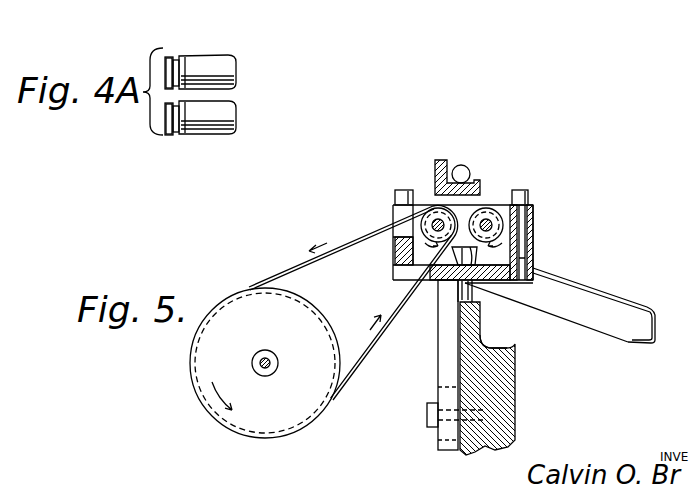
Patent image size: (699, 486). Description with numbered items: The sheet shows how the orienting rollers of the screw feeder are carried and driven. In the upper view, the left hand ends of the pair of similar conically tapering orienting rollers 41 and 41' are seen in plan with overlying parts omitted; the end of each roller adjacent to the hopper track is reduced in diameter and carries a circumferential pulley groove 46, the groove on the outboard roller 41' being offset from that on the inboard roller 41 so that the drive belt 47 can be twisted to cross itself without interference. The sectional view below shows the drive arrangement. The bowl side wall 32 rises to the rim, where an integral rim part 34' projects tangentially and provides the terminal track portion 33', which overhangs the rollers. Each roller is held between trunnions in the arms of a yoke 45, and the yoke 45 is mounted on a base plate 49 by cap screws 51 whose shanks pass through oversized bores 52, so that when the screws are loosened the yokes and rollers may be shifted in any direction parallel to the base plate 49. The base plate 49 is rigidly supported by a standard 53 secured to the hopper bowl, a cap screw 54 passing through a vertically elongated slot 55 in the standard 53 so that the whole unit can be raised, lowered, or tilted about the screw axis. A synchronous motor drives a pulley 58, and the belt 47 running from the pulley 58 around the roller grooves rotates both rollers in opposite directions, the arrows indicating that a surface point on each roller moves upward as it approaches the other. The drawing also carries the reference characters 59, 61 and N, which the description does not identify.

In FIG. 4A, the inboard orienting roller 41 is at (221, 118).
In FIG. 4A, the outboard orienting roller 41' is at (224, 68).
In FIG. 4A, the pulley groove 46 is at (173, 56).
In FIG. 5, the bowl side wall 32 is at (465, 450).
In FIG. 5, the tangentially extending terminal track portion 33' is at (486, 160).
In FIG. 5, the integral rim part 34' is at (436, 166).
In FIG. 5, the yoke 45 is at (535, 240).
In FIG. 5, the belt 47 is at (379, 338).
In FIG. 5, the base plate 49 is at (507, 281).
In FIG. 5, the cap screw 51 is at (395, 197).
In FIG. 5, the bore 52 is at (533, 215).
In FIG. 5, the standard 53 is at (440, 318).
In FIG. 5, the cap screw 54 is at (427, 420).
In FIG. 5, the vertically elongated slot 55 is at (438, 388).
In FIG. 5, the pulley 58 is at (268, 420).
In FIG. 5, the arm 59 is at (620, 297).
In FIG. 5, the rod 61 is at (520, 258).
In FIG. 5, the notch N is at (481, 300).